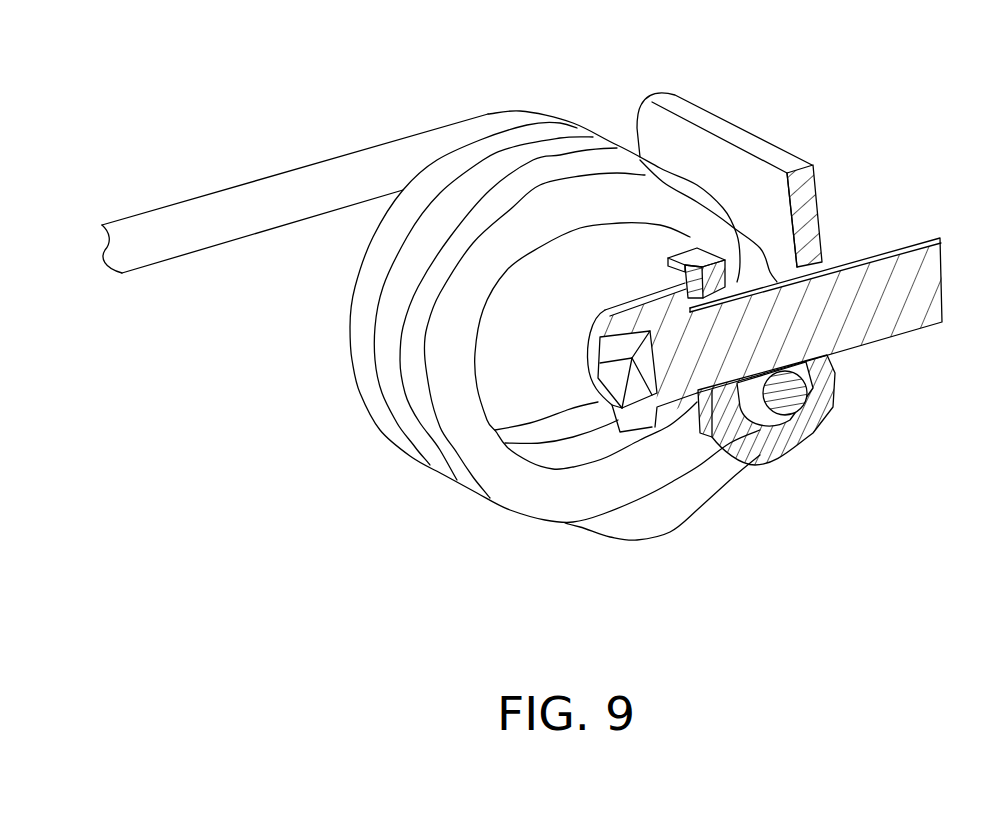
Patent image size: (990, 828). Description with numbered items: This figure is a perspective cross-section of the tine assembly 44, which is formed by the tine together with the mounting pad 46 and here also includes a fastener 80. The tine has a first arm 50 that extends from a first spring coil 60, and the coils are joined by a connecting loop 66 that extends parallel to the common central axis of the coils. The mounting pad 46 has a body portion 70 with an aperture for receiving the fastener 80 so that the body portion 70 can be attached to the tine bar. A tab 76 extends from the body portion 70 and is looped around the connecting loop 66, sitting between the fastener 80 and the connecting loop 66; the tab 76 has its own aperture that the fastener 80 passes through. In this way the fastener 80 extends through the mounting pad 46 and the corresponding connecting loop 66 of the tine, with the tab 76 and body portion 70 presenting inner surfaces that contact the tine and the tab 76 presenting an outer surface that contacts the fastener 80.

The tine assembly 44 is at (843, 139).
The mounting pad 46 is at (763, 150).
The first arm 50 is at (257, 173).
The first spring coil 60 is at (563, 170).
The connecting loop 66 is at (792, 407).
The body portion 70 is at (821, 197).
The tab 76 is at (768, 280).
The fastener 80 is at (655, 413).